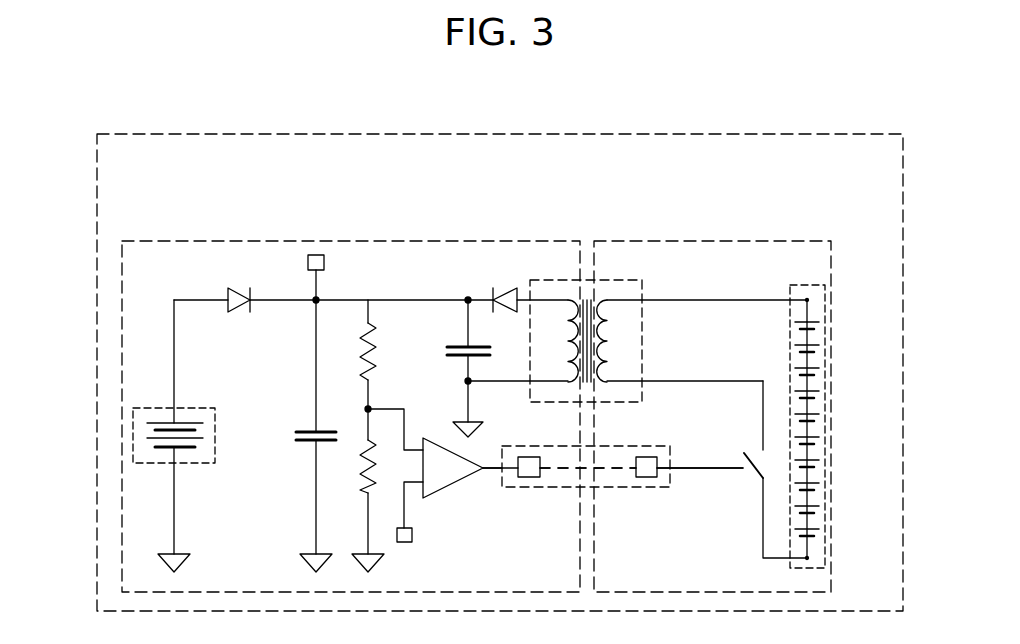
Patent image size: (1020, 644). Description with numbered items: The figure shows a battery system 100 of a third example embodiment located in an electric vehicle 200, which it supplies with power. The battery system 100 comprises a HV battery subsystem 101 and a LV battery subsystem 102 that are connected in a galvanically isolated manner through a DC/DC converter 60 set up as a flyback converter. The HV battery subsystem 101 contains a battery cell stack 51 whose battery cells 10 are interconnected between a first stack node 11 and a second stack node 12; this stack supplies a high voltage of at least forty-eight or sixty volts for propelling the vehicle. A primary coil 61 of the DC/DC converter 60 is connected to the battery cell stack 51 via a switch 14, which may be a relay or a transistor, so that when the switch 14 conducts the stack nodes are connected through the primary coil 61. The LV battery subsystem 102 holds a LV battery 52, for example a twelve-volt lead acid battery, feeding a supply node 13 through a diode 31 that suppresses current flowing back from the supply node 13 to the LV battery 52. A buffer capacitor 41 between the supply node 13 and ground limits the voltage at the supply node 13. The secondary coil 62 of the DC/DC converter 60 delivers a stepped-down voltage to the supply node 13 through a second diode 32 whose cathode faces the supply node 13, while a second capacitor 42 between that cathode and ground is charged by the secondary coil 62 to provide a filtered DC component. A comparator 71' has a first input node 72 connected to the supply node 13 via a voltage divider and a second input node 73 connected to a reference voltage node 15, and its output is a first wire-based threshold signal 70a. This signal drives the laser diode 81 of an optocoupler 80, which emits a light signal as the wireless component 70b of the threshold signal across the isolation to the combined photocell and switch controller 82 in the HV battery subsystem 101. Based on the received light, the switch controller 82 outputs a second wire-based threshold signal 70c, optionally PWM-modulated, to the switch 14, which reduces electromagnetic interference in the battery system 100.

The electric vehicle 200 is at (143, 168).
The battery system 100 is at (657, 218).
The HV battery subsystem 101 is at (797, 241).
The LV battery subsystem 102 is at (193, 241).
The battery cells 10 is at (820, 405).
The first stack node 11 is at (807, 300).
The second stack node 12 is at (807, 558).
The supply node 13 is at (316, 255).
The switch 14 is at (758, 480).
The reference voltage node 15 is at (404, 542).
The diode 31 is at (246, 310).
The second diode 32 is at (493, 296).
The buffer capacitor 41 is at (305, 432).
The second capacitor 42 is at (452, 347).
The battery cell stack 51 is at (812, 419).
The LV battery 52 is at (195, 408).
The DC/DC converter 60 is at (589, 338).
The primary coil 61 is at (608, 350).
The secondary coil 62 is at (567, 350).
The first wire-based threshold signal 70a is at (493, 470).
The wireless component of the threshold signal 70b is at (560, 470).
The second wire-based threshold signal 70c is at (700, 470).
The comparator 71' is at (456, 488).
The first input node 72 is at (415, 438).
The second input node 73 is at (422, 496).
The optocoupler 80 is at (612, 487).
The laser diode 81 is at (530, 477).
The combined photocell and switch controller 82 is at (647, 477).